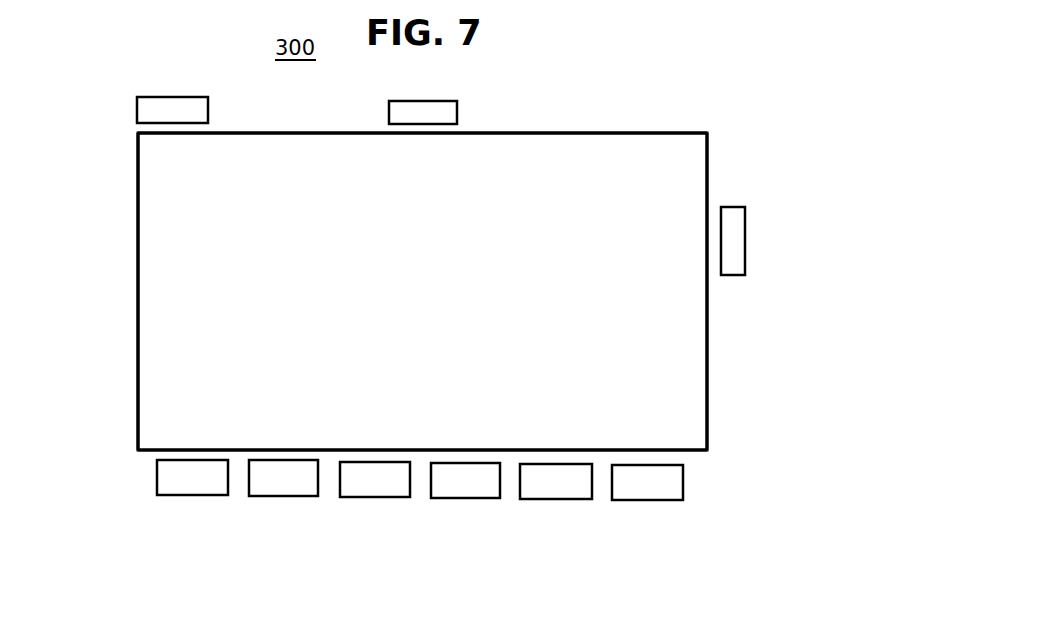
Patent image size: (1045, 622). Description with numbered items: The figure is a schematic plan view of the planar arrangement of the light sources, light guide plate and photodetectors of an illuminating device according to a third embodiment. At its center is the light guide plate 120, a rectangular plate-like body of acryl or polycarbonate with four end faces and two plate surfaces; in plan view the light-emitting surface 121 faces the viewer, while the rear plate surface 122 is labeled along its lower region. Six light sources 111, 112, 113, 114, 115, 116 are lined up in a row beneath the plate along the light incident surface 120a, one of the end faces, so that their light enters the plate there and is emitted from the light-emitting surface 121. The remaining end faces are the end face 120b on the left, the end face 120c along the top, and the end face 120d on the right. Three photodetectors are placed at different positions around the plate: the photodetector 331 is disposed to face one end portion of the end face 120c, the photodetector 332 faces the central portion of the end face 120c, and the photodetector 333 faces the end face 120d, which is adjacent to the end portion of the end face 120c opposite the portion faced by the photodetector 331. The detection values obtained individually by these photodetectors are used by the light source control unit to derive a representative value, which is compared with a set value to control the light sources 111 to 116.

The light guide plate 120 is at (685, 165).
The light incident surface 120a is at (329, 446).
The end face 120b is at (138, 292).
The end face 120c is at (665, 133).
The end face 120d is at (707, 325).
The light-emitting surface 121 is at (435, 302).
The plate surface 122 is at (695, 428).
The photodetector 331 is at (208, 111).
The photodetector 332 is at (457, 113).
The photodetector 333 is at (745, 243).
The light source 111 is at (190, 496).
The light source 112 is at (282, 497).
The light source 113 is at (370, 498).
The light source 114 is at (463, 498).
The light source 115 is at (555, 500).
The light source 116 is at (645, 501).